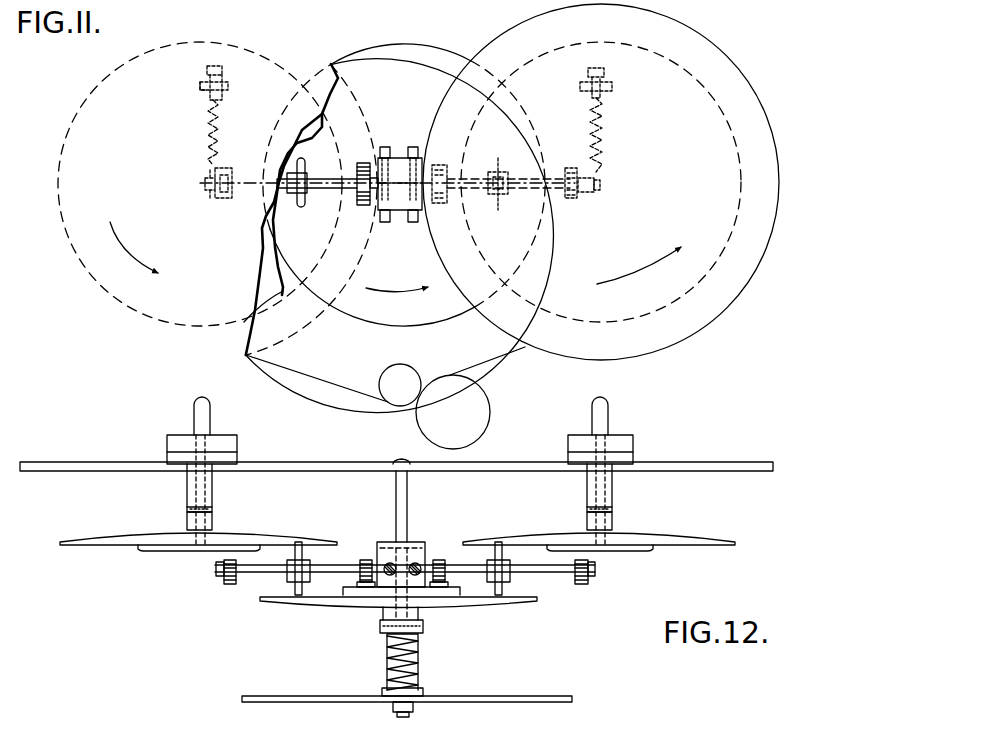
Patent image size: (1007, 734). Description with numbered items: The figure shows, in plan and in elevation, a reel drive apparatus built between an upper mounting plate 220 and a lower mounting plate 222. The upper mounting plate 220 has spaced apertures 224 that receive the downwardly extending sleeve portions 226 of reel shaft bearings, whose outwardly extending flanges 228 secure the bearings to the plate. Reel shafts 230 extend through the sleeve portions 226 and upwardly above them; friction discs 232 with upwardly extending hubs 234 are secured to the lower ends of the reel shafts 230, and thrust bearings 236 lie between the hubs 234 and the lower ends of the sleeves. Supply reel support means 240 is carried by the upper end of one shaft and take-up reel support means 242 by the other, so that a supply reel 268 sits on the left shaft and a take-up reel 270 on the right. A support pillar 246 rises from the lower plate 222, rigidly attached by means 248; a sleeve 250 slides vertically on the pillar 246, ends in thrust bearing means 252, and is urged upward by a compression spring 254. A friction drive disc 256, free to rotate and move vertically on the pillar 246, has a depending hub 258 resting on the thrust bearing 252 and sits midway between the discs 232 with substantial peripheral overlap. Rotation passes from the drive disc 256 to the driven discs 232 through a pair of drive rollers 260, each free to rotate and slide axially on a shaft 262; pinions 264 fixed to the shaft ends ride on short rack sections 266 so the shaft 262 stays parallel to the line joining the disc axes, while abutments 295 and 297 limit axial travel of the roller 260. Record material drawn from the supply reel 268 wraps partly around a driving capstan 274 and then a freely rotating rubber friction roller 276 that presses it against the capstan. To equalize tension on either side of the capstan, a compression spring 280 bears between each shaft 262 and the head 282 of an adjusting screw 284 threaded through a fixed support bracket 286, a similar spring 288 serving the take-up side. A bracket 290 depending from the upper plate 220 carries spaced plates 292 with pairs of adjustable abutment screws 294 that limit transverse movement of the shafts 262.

In FIG. 12, the upper mounting plate 220 is at (746, 473).
In FIG. 12, the lower mounting plate 222 is at (561, 694).
In FIG. 12, the spaced apertures 224 is at (170, 478).
In FIG. 12, the sleeve portions 226 is at (213, 496).
In FIG. 12, the flanges 228 is at (238, 456).
In FIG. 12, the reel shafts 230 is at (232, 483).
In FIG. 11, the friction discs 232 is at (137, 308).
In FIG. 12, the friction discs 232 is at (107, 547).
In FIG. 12, the hubs 234 is at (187, 522).
In FIG. 12, the thrust bearings 236 is at (187, 509).
In FIG. 12, the supply reel support means 240 is at (212, 430).
In FIG. 12, the take-up reel support means 242 is at (612, 432).
In FIG. 12, the support pillar 246 is at (418, 674).
In FIG. 12, the attaching means 248 is at (421, 692).
In FIG. 12, the sleeve 250 is at (420, 650).
In FIG. 12, the thrust bearing means 252 is at (380, 628).
In FIG. 12, the compression spring 254 is at (388, 656).
In FIG. 11, the friction drive disc 256 is at (462, 32).
In FIG. 12, the friction drive disc 256 is at (291, 612).
In FIG. 12, the depending hub 258 is at (382, 616).
In FIG. 11, the drive roller 260 is at (497, 170).
In FIG. 12, the drive roller 260 is at (534, 602).
In FIG. 11, the shaft 262 is at (268, 222).
In FIG. 12, the shaft 262 is at (560, 582).
In FIG. 11, the pinions 264 is at (584, 195).
In FIG. 12, the pinions 264 is at (439, 558).
In FIG. 11, the rack sections 266 is at (573, 166).
In FIG. 12, the rack sections 266 is at (592, 584).
In FIG. 11, the supply reel 268 is at (80, 322).
In FIG. 11, the take-up reel 270 is at (736, 322).
In FIG. 11, the driving capstan 274 is at (415, 370).
In FIG. 11, the rubber friction roller 276 is at (490, 410).
In FIG. 11, the compression spring 280 is at (208, 147).
In FIG. 11, the head 282 is at (222, 104).
In FIG. 11, the adjusting screw 284 is at (207, 72).
In FIG. 11, the fixed support bracket 286 is at (200, 94).
In FIG. 11, the spring 288 is at (600, 136).
In FIG. 12, the bracket 290 is at (409, 511).
In FIG. 11, the depending spaced plates 292 is at (398, 145).
In FIG. 12, the depending spaced plates 292 is at (386, 546).
In FIG. 11, the adjustable abutment screws 294 is at (437, 163).
In FIG. 12, the adjustable abutment screws 294 is at (384, 567).
In FIG. 12, the abutment 295 is at (145, 552).
In FIG. 12, the abutment 297 is at (461, 590).